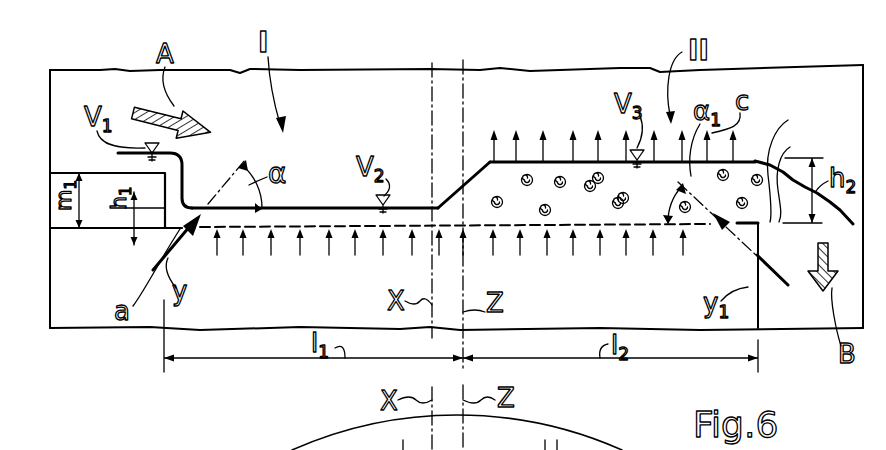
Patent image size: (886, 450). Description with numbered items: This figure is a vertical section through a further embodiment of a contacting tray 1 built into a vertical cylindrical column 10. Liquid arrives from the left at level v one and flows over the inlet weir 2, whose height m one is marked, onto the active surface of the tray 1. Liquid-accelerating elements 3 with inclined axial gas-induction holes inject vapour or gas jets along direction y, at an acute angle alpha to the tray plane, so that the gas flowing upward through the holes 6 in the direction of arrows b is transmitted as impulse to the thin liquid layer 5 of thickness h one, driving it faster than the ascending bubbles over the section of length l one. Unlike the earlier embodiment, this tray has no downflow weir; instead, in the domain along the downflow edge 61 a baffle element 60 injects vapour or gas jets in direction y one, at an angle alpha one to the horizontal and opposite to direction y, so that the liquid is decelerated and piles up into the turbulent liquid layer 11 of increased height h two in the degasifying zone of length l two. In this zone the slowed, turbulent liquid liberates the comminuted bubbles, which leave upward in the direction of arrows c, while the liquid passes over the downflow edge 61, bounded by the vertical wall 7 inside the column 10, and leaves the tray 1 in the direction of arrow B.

The column 10 is at (48, 75).
The tray 1 is at (90, 236).
The inlet weir 2 is at (165, 173).
The liquid-accelerating elements 3 is at (180, 229).
The liquid layer 5 is at (322, 207).
The holes 6 is at (432, 213).
The turbulent liquid layer 11 is at (533, 174).
The baffle element 60 is at (804, 165).
The downflow edge 61 is at (801, 176).
The vertical wall 7 is at (760, 303).